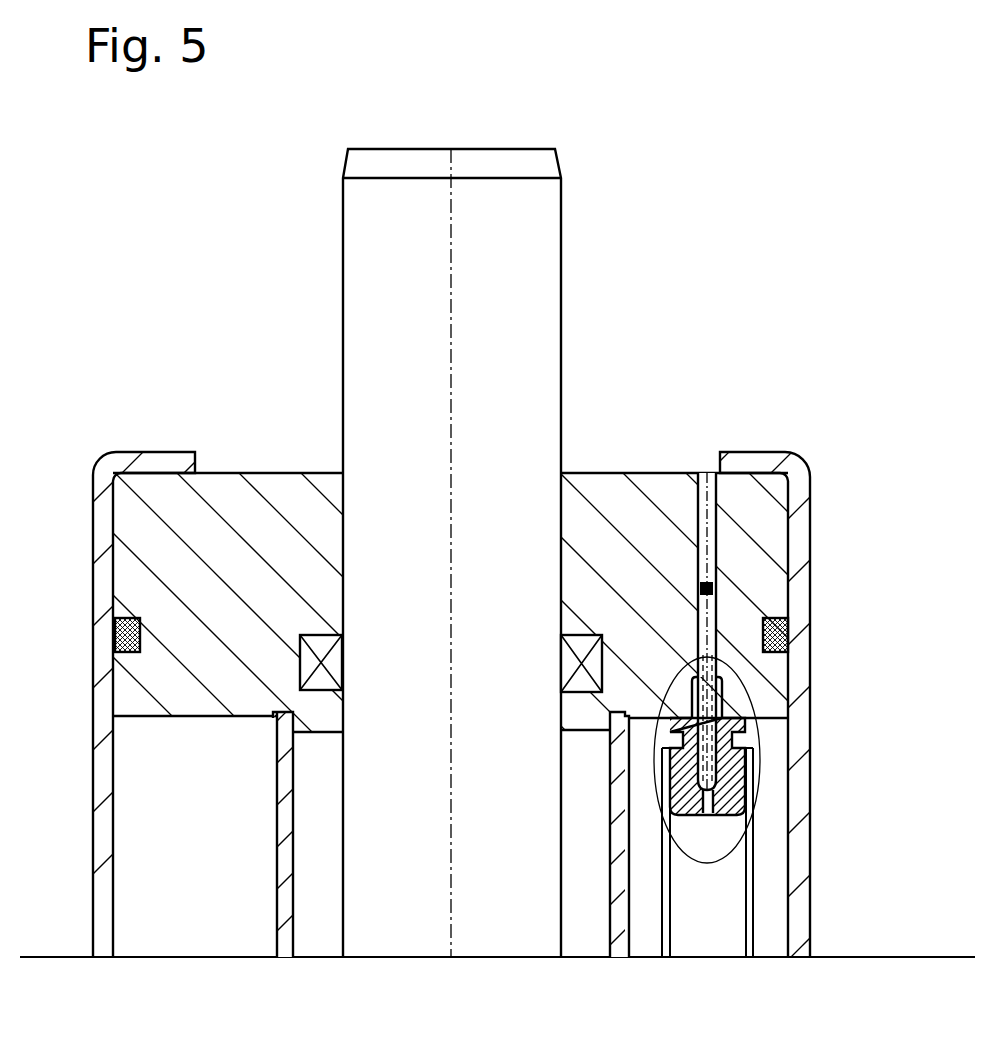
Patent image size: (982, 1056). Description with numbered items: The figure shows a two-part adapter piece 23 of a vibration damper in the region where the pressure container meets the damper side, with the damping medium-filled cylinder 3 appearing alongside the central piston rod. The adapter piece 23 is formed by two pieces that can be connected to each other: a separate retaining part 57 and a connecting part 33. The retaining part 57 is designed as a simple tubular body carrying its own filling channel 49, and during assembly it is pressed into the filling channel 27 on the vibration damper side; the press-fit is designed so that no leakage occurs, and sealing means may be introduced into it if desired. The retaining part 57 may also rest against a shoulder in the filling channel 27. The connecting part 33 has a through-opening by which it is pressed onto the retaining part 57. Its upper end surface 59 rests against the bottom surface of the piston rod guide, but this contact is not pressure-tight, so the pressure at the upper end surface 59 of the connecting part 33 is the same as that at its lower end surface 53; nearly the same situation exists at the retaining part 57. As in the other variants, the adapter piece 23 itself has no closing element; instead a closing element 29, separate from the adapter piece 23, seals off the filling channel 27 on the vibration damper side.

The cylinder 3 is at (287, 945).
The adapter piece 23 is at (745, 693).
The filling channel 27 is at (705, 476).
The closing element 29 is at (703, 578).
The connecting part 33 is at (750, 748).
The filling channel 49 is at (705, 820).
The lower end surface 53 is at (688, 820).
The retaining part 57 is at (750, 793).
The upper end surface 59 is at (680, 692).